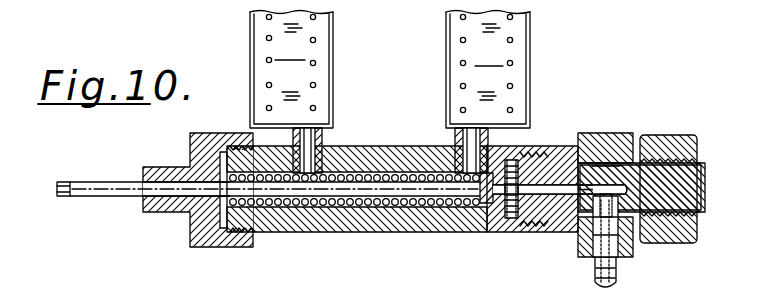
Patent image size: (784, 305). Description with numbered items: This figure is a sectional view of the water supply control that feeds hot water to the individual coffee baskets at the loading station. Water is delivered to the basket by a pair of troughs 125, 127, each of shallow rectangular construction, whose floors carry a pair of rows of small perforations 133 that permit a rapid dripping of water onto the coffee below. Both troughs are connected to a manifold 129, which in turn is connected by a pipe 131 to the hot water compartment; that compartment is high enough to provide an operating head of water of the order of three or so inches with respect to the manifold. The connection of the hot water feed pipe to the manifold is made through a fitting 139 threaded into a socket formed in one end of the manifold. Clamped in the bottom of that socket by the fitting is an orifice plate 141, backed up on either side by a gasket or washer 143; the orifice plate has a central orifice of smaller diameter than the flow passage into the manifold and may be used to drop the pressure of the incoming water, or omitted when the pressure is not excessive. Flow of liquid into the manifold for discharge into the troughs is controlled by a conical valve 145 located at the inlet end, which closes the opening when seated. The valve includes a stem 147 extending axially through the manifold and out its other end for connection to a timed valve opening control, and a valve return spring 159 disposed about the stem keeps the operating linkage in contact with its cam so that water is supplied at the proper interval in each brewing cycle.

The trough 125 is at (291, 92).
The trough 127 is at (488, 92).
The manifold 129 is at (318, 232).
The pipe 131 is at (593, 268).
The perforations 133 is at (266, 37).
The fitting 139 is at (653, 200).
The orifice plate 141 is at (511, 213).
The gasket 143 is at (508, 208).
The conical valve 145 is at (503, 180).
The stem 147 is at (357, 189).
The valve return spring 159 is at (377, 205).